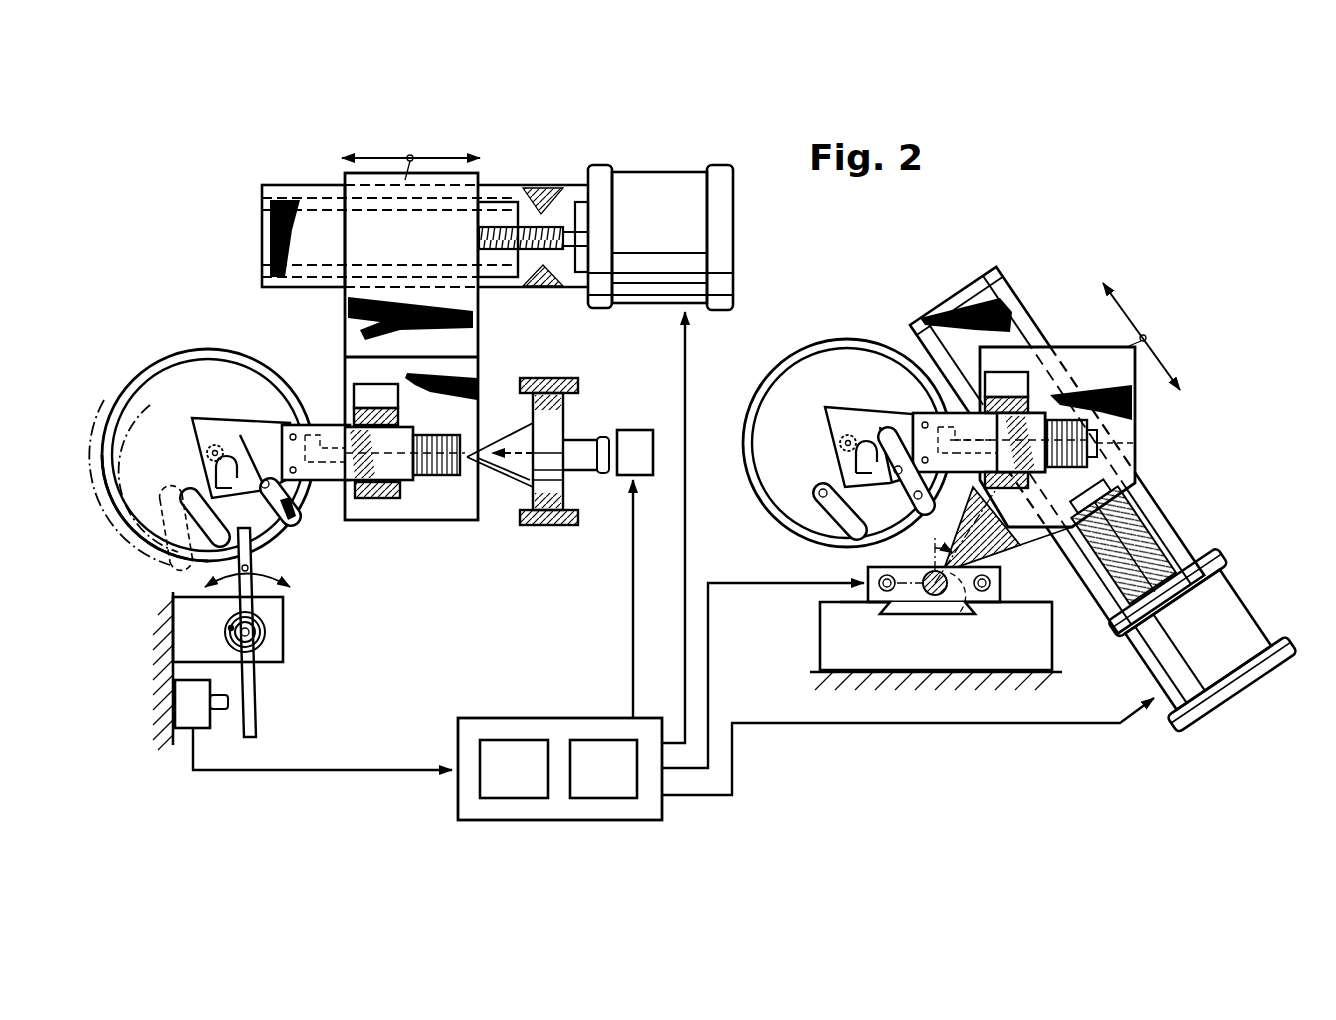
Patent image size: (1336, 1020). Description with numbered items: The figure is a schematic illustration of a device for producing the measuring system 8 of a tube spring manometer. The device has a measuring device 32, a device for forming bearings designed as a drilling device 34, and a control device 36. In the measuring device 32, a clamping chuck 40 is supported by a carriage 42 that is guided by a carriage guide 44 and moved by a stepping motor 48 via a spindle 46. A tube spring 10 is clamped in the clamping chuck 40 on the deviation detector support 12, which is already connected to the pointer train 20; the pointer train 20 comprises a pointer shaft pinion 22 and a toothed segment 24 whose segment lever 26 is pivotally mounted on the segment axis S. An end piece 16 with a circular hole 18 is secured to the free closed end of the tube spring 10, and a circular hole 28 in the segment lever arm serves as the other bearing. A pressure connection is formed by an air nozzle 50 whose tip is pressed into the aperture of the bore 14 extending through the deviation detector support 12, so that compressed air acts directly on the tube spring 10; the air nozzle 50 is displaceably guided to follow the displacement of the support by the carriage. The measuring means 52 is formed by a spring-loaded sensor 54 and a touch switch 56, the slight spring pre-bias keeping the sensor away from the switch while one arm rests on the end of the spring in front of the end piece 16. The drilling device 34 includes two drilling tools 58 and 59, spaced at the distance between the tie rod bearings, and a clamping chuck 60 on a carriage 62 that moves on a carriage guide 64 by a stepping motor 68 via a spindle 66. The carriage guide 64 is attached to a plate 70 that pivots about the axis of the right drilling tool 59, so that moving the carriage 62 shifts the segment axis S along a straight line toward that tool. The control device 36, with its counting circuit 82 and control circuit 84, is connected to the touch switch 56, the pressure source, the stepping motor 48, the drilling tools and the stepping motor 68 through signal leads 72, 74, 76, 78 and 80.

The measuring system 8 is at (218, 350).
The tube spring 10 is at (125, 435).
The deviation detector support 12 is at (330, 430).
The bore 14 is at (388, 455).
The end piece 16 is at (178, 497).
The circular hole 18 is at (818, 493).
The pointer train 20 is at (228, 432).
The pointer shaft pinion 22 is at (212, 445).
The toothed segment 24 is at (243, 432).
The segment lever 26 is at (300, 530).
The circular hole 28 is at (930, 568).
The measuring device 32 is at (170, 322).
The drilling device 34 is at (980, 252).
The control device 36 is at (612, 820).
The clamping chuck 40 is at (385, 500).
The carriage 42 is at (478, 306).
The carriage guide 44 is at (262, 248).
The spindle 46 is at (548, 262).
The stepping motor 48 is at (660, 237).
The air nozzle 50 is at (516, 478).
The measuring means 52 is at (284, 648).
The spring-loaded sensor 54 is at (252, 545).
The touch switch 56 is at (200, 727).
The drilling tool 58 is at (887, 602).
The drilling tool 59 is at (983, 602).
The clamping chuck 60 is at (1012, 527).
The carriage 62 is at (1133, 441).
The carriage guide 64 is at (1000, 292).
The spindle 66 is at (1150, 540).
The stepping motor 68 is at (1222, 692).
The plate 70 is at (1058, 600).
The signal lead 72 is at (368, 770).
The signal lead 74 is at (633, 646).
The signal lead 76 is at (685, 630).
The signal lead 78 is at (726, 583).
The signal lead 80 is at (775, 718).
The counting circuit 82 is at (514, 769).
The control circuit 84 is at (603, 769).
The segment axis S is at (262, 488).